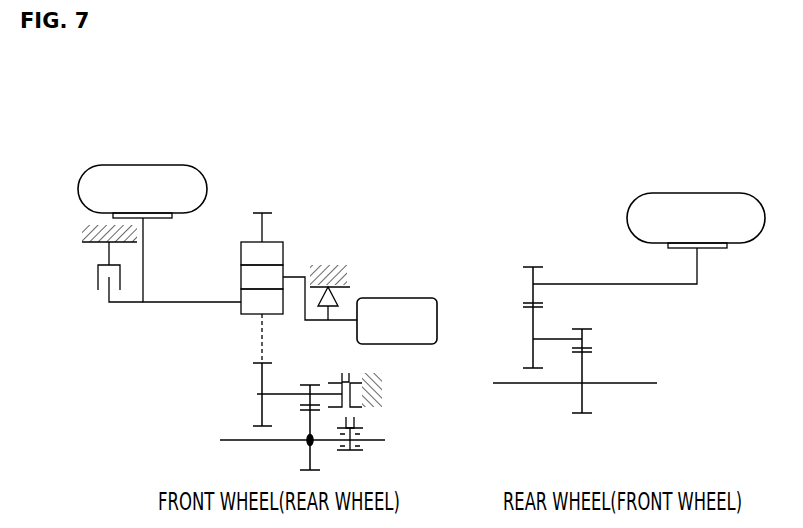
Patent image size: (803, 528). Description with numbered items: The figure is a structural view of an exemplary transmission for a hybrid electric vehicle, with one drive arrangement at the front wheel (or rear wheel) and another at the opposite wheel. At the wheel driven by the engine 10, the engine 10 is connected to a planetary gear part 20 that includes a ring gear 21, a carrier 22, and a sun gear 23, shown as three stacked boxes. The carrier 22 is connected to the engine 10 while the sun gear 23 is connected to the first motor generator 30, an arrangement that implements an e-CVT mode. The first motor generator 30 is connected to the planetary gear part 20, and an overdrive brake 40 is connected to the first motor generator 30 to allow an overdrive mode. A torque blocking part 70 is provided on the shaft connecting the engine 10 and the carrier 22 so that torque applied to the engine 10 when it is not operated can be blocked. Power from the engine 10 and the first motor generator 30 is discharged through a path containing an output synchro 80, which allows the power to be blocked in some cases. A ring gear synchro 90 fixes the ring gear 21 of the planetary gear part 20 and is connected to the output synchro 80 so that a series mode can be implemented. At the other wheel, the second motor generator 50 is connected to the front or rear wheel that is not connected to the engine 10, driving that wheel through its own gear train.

The engine 10 is at (411, 298).
The planetary gear part 20 is at (252, 204).
The ring gear 21 is at (241, 252).
The carrier 22 is at (241, 278).
The sun gear 23 is at (241, 301).
The first motor generator 30 is at (143, 164).
The overdrive brake 40 is at (95, 278).
The second motor generator 50 is at (697, 192).
The torque blocking part 70 is at (348, 285).
The output synchro 80 is at (356, 425).
The ring gear synchro 90 is at (345, 379).